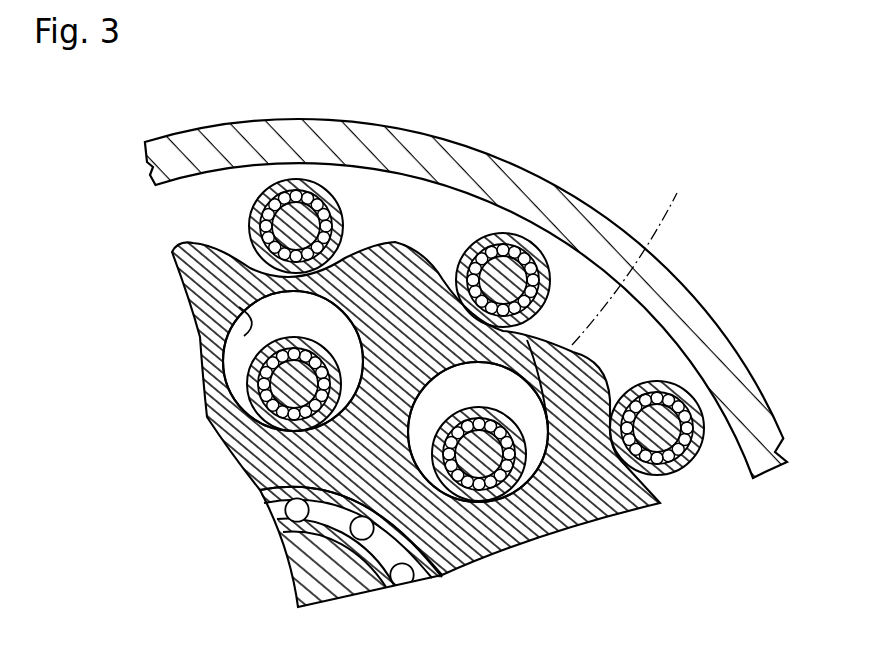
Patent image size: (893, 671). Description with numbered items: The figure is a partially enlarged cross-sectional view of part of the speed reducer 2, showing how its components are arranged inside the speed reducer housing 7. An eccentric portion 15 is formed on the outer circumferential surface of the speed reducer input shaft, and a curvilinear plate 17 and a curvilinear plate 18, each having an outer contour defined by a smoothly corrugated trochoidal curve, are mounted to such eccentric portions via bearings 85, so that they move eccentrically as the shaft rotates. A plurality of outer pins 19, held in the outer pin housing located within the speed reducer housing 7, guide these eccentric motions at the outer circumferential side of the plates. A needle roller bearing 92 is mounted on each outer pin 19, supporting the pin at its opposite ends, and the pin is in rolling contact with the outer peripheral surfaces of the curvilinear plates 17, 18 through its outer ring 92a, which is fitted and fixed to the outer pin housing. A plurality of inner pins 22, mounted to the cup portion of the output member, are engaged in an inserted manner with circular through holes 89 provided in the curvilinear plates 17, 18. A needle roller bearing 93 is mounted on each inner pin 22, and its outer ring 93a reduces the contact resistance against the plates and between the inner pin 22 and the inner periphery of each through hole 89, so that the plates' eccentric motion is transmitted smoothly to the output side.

The speed reducer 2 is at (229, 113).
The speed reducer housing 7 is at (290, 130).
The outer pin 19 is at (476, 263).
The needle roller bearing 92 is at (533, 214).
The outer ring 92a is at (535, 255).
The curvilinear plate 17 is at (633, 254).
The curvilinear plate 18 is at (356, 327).
The circular through hole 89 is at (247, 333).
The outer ring 93a is at (257, 360).
The needle roller bearing 93 is at (228, 390).
The inner pin 22 is at (287, 393).
The eccentric portion 15 is at (340, 578).
The bearing 85 is at (403, 573).